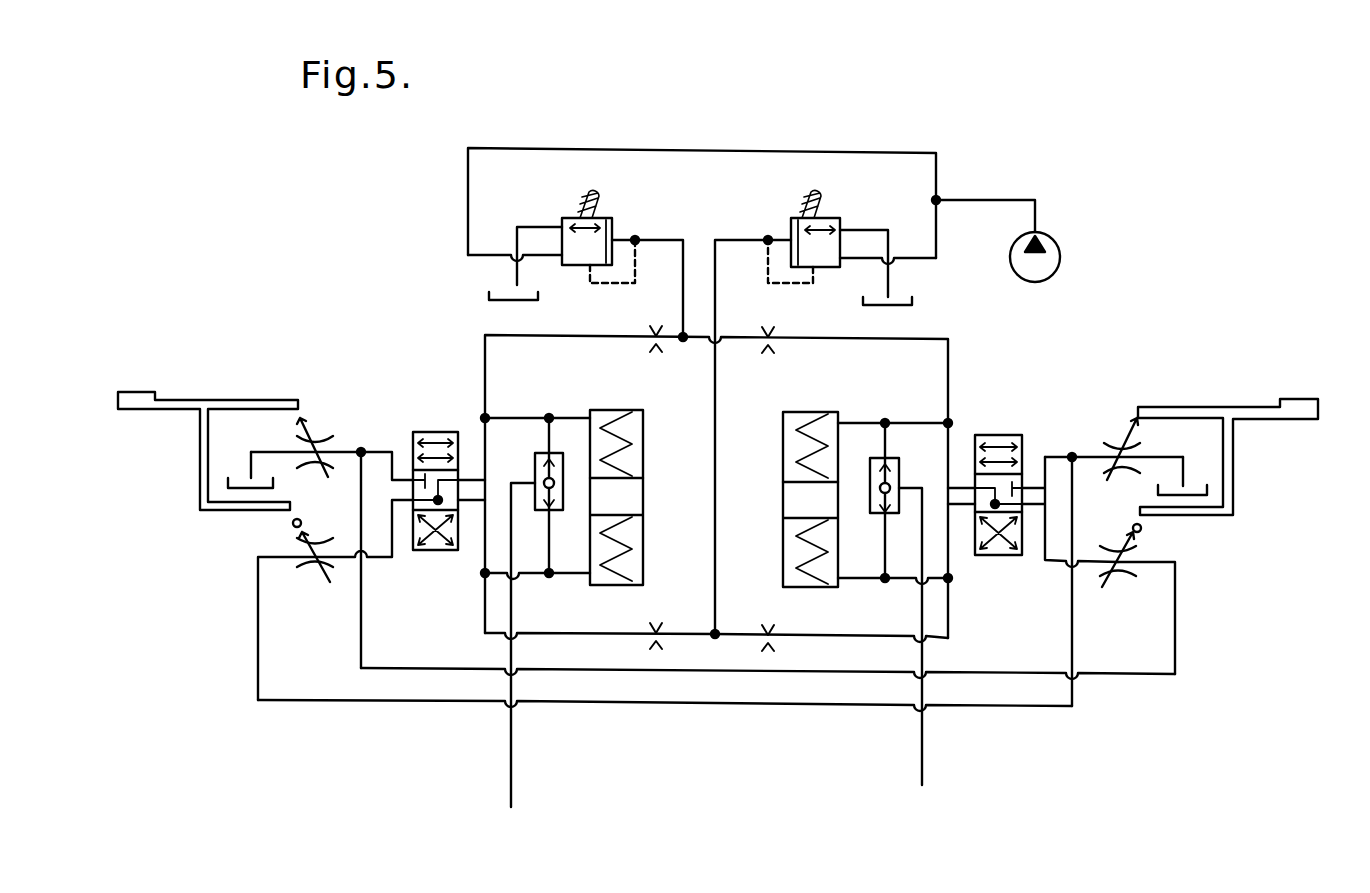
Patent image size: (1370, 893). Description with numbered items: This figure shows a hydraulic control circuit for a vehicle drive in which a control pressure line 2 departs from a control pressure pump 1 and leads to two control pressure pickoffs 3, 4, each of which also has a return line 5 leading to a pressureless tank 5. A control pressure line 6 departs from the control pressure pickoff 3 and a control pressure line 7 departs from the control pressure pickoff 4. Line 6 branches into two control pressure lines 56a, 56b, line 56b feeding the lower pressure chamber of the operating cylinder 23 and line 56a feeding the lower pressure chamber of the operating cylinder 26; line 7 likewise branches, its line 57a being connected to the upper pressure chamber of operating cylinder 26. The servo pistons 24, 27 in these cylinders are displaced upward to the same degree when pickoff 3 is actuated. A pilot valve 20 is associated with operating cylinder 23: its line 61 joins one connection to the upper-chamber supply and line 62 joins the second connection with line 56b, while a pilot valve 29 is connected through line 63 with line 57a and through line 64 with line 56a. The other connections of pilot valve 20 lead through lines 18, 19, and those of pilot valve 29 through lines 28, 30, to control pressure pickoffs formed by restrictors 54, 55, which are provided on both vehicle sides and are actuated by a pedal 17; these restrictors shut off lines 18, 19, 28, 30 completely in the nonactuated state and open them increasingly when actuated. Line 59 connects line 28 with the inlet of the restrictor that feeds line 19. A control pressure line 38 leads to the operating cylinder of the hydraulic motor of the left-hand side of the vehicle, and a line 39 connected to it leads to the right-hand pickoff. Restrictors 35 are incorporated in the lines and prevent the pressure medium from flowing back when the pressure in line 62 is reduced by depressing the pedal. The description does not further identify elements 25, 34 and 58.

The control pressure pump 1 is at (1060, 245).
The control pressure line 2 is at (962, 202).
The control pressure pickoff 3 is at (843, 218).
The control pressure pickoff 4 is at (612, 218).
The return line 5 is at (515, 277).
The control pressure line 6 is at (718, 302).
The control pressure line 7 is at (668, 240).
The pedal 17 is at (125, 392).
The line 18 is at (378, 450).
The line 19 is at (383, 562).
The pilot valve 20 is at (445, 430).
The operating cylinder 23 is at (645, 412).
The servo piston 24 is at (645, 498).
The spring 25 is at (792, 441).
The operating cylinder 26 is at (783, 412).
The servo piston 27 is at (785, 508).
The line 28 is at (1054, 455).
The pilot valve 29 is at (1005, 435).
The line 30 is at (1035, 562).
The conduit 34 is at (924, 755).
The restrictor 35 is at (652, 330).
The control pressure line 38 is at (508, 748).
The line 39 is at (1177, 620).
The restrictor 54 is at (318, 470).
The restrictor 55 is at (315, 575).
The control pressure line 56a is at (885, 637).
The control pressure line 56b is at (590, 633).
The control pressure line 57a is at (950, 370).
The conduit 58 is at (450, 668).
The line 59 is at (372, 703).
The line 61 is at (488, 447).
The line 62 is at (483, 573).
The line 63 is at (946, 448).
The line 64 is at (950, 568).